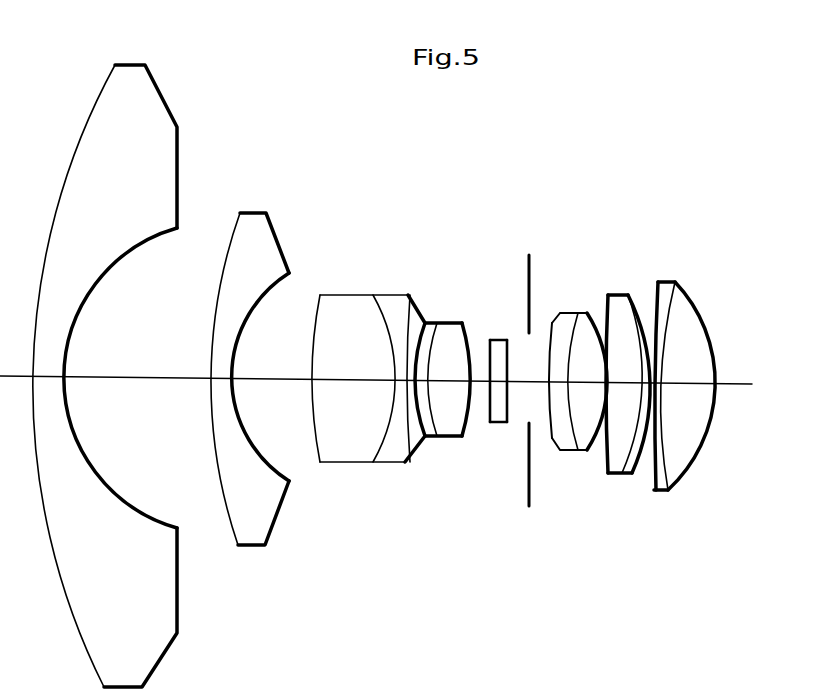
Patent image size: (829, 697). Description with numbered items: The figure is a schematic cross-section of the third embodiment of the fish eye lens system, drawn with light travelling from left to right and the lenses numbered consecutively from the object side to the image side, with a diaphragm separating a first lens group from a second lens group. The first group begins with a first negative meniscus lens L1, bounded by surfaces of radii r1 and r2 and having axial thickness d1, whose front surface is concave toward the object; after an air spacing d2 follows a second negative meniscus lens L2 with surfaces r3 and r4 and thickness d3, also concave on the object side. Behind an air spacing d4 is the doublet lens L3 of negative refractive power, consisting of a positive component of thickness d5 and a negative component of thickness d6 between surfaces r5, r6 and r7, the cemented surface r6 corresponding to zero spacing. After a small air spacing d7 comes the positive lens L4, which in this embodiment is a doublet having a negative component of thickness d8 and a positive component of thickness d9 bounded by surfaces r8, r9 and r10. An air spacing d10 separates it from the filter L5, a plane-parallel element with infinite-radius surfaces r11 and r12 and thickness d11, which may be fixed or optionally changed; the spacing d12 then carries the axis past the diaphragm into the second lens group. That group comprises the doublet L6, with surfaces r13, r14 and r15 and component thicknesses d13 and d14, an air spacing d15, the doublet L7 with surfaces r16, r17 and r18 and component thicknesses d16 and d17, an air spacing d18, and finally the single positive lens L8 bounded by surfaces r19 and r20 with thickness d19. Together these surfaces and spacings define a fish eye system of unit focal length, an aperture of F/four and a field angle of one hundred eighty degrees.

The first negative meniscus lens L1 is at (180, 52).
The second negative meniscus lens L2 is at (293, 135).
The doublet lens L3 is at (425, 162).
The positive lens L4 is at (472, 178).
The filter L5 is at (510, 167).
The sixth lens L6 is at (605, 183).
The seventh lens L7 is at (658, 169).
The eighth lens L8 is at (718, 185).
The first lens surface radius r1 is at (85, 650).
The second lens surface radius r2 is at (137, 507).
The third lens surface radius r3 is at (230, 540).
The fourth lens surface radius r4 is at (268, 468).
The fifth lens surface radius r5 is at (313, 460).
The sixth lens surface radius r6 is at (370, 452).
The seventh lens surface radius r7 is at (410, 412).
The eighth lens surface radius r8 is at (425, 437).
The ninth lens surface radius r9 is at (440, 415).
The tenth lens surface radius r10 is at (468, 432).
The eleventh lens surface radius r11 is at (489, 420).
The twelfth lens surface radius r12 is at (508, 421).
The thirteenth lens surface radius r13 is at (549, 436).
The fourteenth lens surface radius r14 is at (573, 450).
The fifteenth lens surface radius r15 is at (598, 455).
The sixteenth lens surface radius r16 is at (606, 475).
The seventeenth lens surface radius r17 is at (633, 476).
The eighteenth lens surface radius r18 is at (650, 458).
The nineteenth lens surface radius r19 is at (653, 491).
The twentieth lens surface radius r20 is at (690, 466).
The axial thickness of first lens d1 is at (47, 375).
The axial air spacing d2 is at (127, 377).
The axial thickness of second lens d3 is at (217, 377).
The axial air spacing d4 is at (275, 378).
The axial thickness of positive component d5 is at (350, 380).
The axial thickness of negative component d6 is at (402, 377).
The axial air spacing d7 is at (412, 375).
The axial thickness of negative component d8 is at (425, 370).
The axial thickness of positive component d9 is at (455, 381).
The axial air spacing d10 is at (480, 376).
The axial thickness of filter d11 is at (498, 377).
The axial air spacing d12 is at (523, 383).
The axial thickness of first component of sixth lens d13 is at (553, 322).
The axial thickness of second component of sixth lens d14 is at (580, 384).
The axial air spacing d15 is at (605, 382).
The axial thickness of first component of seventh lens d16 is at (622, 384).
The axial thickness of second component of seventh lens d17 is at (636, 300).
The axial air spacing d18 is at (662, 373).
The axial thickness of eighth lens d19 is at (668, 385).